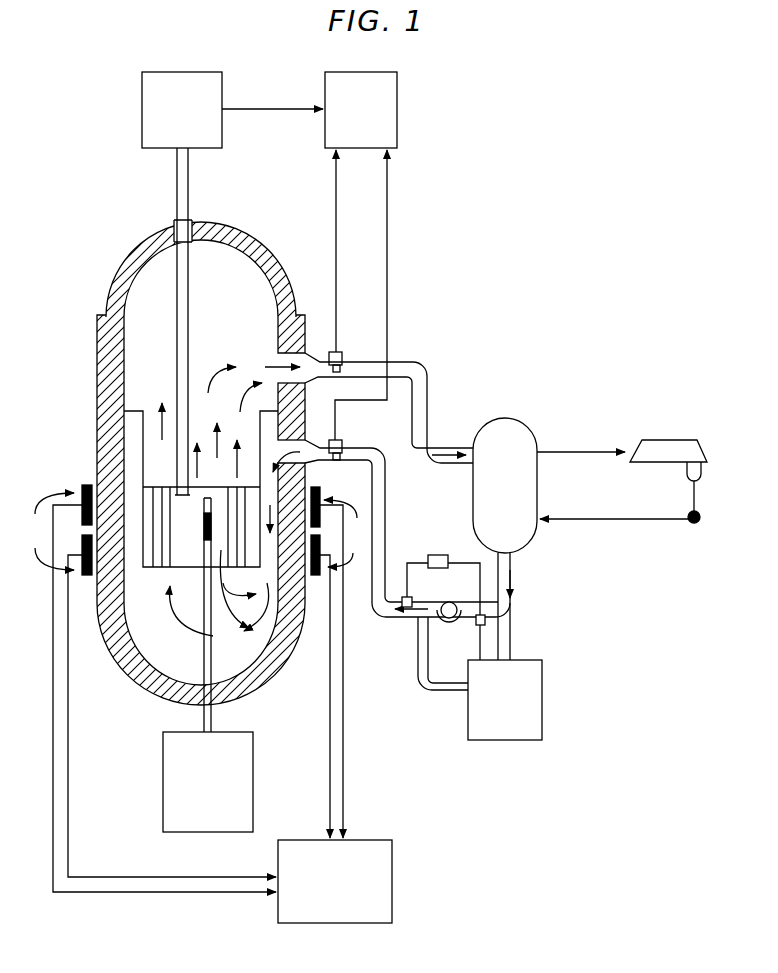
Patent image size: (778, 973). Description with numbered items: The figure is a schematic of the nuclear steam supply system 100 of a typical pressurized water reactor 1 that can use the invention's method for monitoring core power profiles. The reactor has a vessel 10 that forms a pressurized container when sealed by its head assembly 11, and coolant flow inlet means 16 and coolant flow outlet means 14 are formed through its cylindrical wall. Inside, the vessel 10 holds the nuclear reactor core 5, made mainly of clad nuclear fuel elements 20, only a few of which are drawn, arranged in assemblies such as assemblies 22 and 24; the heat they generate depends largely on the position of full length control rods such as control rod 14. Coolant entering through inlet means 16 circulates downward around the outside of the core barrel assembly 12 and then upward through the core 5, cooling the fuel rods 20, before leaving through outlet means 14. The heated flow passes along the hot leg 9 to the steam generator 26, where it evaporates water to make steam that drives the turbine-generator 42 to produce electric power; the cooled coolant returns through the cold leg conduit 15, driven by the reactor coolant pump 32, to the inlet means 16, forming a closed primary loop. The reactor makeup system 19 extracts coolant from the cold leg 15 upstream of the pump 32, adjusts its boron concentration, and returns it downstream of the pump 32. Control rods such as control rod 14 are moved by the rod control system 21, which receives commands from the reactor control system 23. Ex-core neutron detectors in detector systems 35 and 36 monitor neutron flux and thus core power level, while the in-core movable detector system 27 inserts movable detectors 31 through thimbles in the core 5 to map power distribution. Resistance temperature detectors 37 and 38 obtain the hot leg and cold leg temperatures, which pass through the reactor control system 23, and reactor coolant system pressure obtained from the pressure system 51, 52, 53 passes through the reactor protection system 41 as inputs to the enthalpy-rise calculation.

The nuclear steam supply system 100 is at (70, 48).
The pressurized water reactor 1 is at (139, 691).
The nuclear reactor core 5 is at (222, 597).
The hot leg 9 is at (414, 361).
The vessel 10 is at (97, 420).
The head assembly 11 is at (247, 226).
The core barrel assembly 12 is at (143, 568).
The control rod 14 is at (177, 311).
The cold leg conduit 15 is at (386, 503).
The coolant flow inlet means 16 is at (320, 490).
The reactor makeup system 19 is at (542, 707).
The clad nuclear fuel elements 20 is at (243, 500).
The rod control system 21 is at (190, 72).
The fuel assembly 22 is at (240, 568).
The reactor control system 23 is at (397, 95).
The fuel assembly 24 is at (167, 568).
The steam generator 26 is at (473, 498).
The in-core movable detector system 27 is at (253, 745).
The movable detectors 31 is at (204, 521).
The reactor coolant pump 32 is at (452, 603).
The ex-core neutron detector system 35 is at (44, 541).
The ex-core neutron detector system 36 is at (366, 543).
The resistance temperature detector 37 is at (343, 356).
The resistance temperature detector 38 is at (343, 446).
The reactor protection system 41 is at (392, 875).
The turbine-generator 42 is at (678, 440).
The pressure system component 51 is at (479, 625).
The pressure system component 52 is at (410, 597).
The pressure system component 53 is at (440, 555).